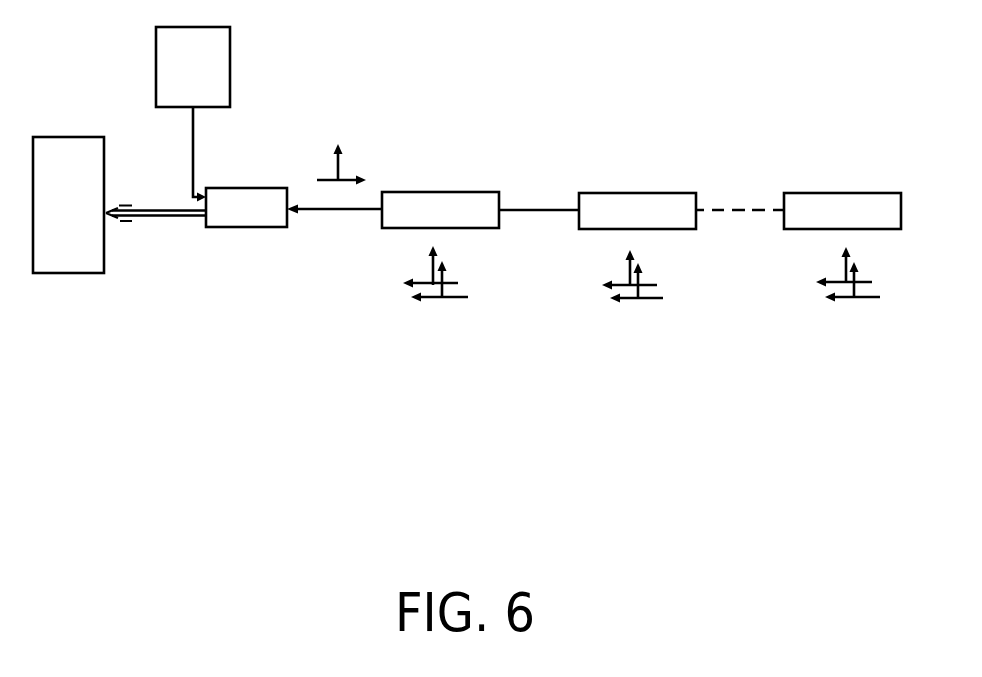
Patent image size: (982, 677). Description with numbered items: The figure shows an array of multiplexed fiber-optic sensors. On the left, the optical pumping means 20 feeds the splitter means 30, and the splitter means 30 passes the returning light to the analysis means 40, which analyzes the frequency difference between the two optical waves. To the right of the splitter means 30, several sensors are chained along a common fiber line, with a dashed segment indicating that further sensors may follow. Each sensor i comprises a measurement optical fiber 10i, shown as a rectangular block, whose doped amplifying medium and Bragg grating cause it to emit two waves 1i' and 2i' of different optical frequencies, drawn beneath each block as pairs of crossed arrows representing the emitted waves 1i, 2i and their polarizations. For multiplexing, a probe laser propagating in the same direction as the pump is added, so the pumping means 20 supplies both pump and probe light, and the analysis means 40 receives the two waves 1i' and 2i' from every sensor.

The optical pumping means 20 is at (217, 74).
The splitter means 30 is at (244, 222).
The analysis means 40 is at (63, 265).
The measurement optical fiber 10i is at (657, 223).
The first optical wave 1i' is at (634, 322).
The second optical wave 2i' is at (657, 335).
The first polarization component 1i is at (634, 322).
The second polarization component 2i is at (657, 335).